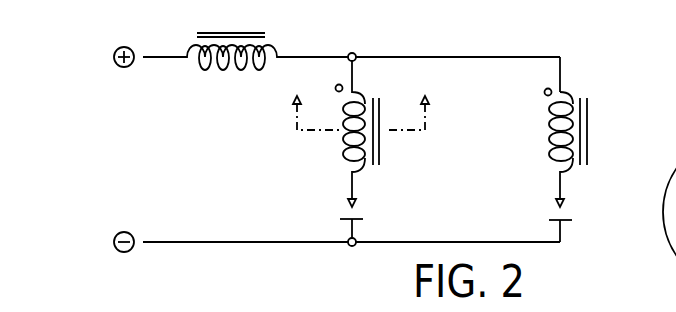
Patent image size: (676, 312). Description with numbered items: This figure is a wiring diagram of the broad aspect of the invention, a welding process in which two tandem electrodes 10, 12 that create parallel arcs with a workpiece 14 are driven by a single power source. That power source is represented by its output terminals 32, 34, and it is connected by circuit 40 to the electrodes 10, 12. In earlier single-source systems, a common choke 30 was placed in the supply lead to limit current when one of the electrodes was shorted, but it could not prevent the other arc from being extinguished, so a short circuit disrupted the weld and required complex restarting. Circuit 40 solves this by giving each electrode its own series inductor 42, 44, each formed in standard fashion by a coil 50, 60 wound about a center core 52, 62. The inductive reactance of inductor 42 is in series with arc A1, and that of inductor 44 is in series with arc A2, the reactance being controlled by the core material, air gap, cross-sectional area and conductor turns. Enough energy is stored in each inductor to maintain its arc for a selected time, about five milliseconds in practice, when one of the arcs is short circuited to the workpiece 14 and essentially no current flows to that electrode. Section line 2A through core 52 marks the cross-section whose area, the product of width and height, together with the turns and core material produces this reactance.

The electrode 10 is at (350, 188).
The electrode 12 is at (563, 189).
The workpiece 14 is at (238, 244).
The choke 30 is at (242, 30).
The output terminal 32 is at (305, 55).
The output terminal 34 is at (163, 240).
The circuit 40 is at (506, 54).
The series inductor 42 is at (333, 167).
The series inductor 44 is at (541, 139).
The coil 50 is at (345, 103).
The center core 52 is at (378, 92).
The coil 60 is at (549, 108).
The center core 62 is at (588, 92).
The arc A1 is at (362, 212).
The arc A2 is at (568, 210).
The section line 2A is at (361, 137).